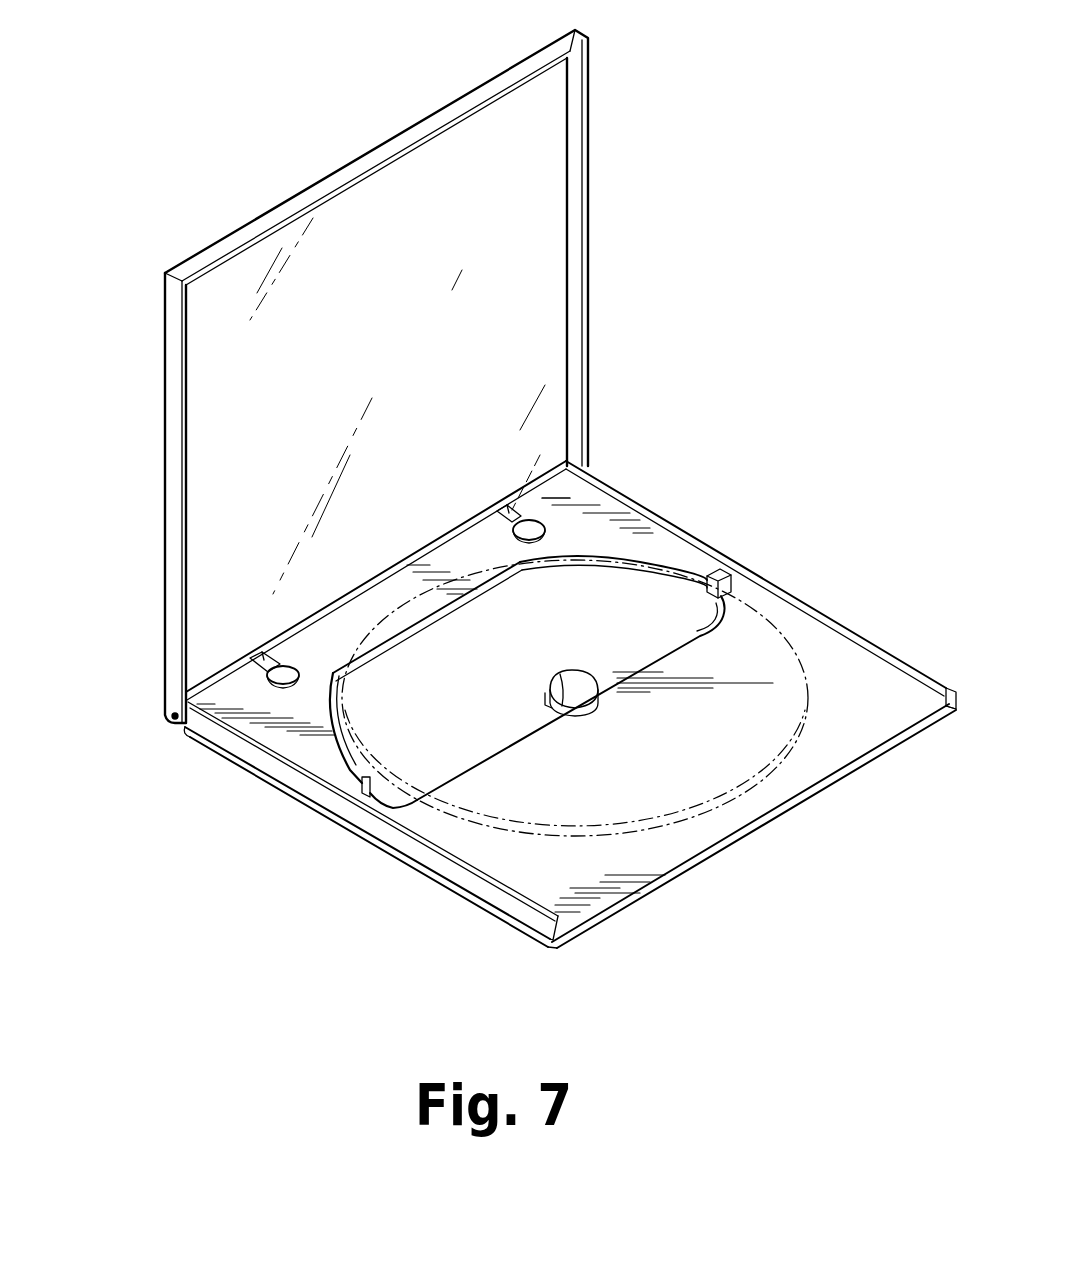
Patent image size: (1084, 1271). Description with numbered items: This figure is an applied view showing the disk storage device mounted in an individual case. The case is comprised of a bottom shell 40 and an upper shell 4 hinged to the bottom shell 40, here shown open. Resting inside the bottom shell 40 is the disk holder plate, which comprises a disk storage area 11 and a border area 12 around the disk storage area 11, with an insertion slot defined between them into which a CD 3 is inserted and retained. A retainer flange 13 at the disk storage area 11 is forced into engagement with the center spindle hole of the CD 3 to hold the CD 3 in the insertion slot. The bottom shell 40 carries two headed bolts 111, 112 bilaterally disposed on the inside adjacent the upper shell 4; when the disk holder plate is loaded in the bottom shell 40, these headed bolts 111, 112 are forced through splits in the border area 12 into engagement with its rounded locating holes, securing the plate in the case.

The upper shell 4 is at (548, 223).
The bottom shell 40 is at (855, 683).
The border area 12 is at (580, 523).
The disk storage area 11 is at (693, 612).
The CD (compact disk) 3 is at (675, 827).
The retainer flange 13 is at (565, 682).
The headed bolt 111 is at (278, 662).
The headed bolt 112 is at (528, 514).